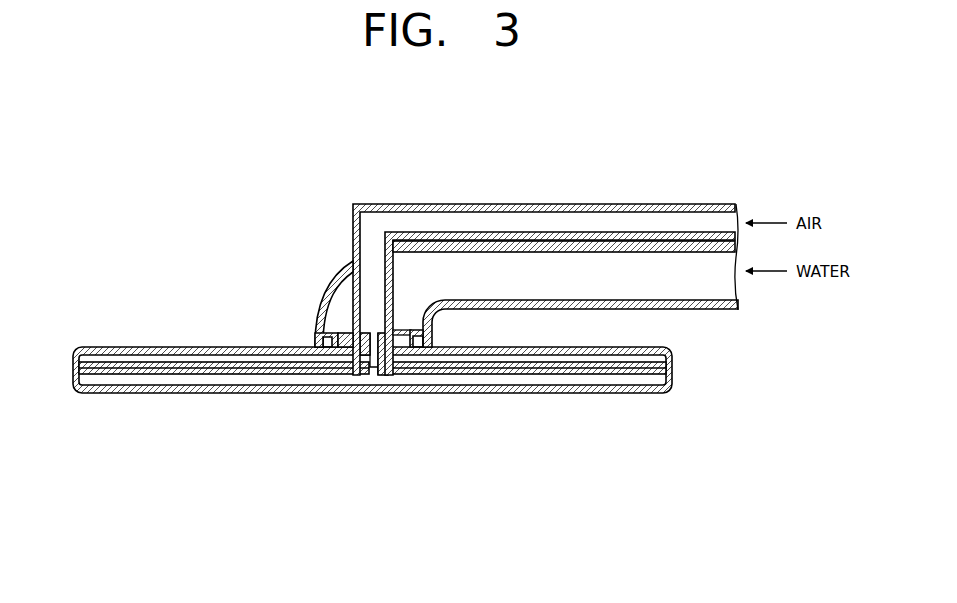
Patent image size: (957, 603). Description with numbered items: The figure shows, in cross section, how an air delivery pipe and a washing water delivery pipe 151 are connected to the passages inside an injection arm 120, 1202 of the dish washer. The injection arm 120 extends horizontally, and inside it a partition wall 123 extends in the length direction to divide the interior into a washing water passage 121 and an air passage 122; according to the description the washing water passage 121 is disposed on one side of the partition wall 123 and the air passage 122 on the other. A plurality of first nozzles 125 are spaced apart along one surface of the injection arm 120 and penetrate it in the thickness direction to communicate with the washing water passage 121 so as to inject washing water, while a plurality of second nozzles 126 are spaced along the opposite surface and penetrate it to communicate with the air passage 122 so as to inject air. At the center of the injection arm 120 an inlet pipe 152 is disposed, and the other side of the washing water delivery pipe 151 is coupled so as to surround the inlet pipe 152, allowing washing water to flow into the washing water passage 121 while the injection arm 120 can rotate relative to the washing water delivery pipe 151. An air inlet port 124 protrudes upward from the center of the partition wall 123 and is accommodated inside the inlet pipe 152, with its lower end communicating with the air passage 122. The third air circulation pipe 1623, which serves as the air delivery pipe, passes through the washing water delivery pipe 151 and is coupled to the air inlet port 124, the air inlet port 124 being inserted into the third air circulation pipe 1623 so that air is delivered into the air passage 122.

The injection arm 120 is at (372, 378).
The coupling hole of base plate 1202 is at (338, 396).
The washing water passage 121 is at (496, 360).
The air passage 122 is at (589, 378).
The partition wall 123 is at (243, 371).
The air inlet port 124 is at (374, 332).
The first nozzles 125 is at (111, 349).
The second nozzles 126 is at (108, 392).
The washing water delivery pipe 151 is at (604, 251).
The inlet pipe 152 is at (345, 332).
The third air circulation pipe 1623 is at (510, 204).